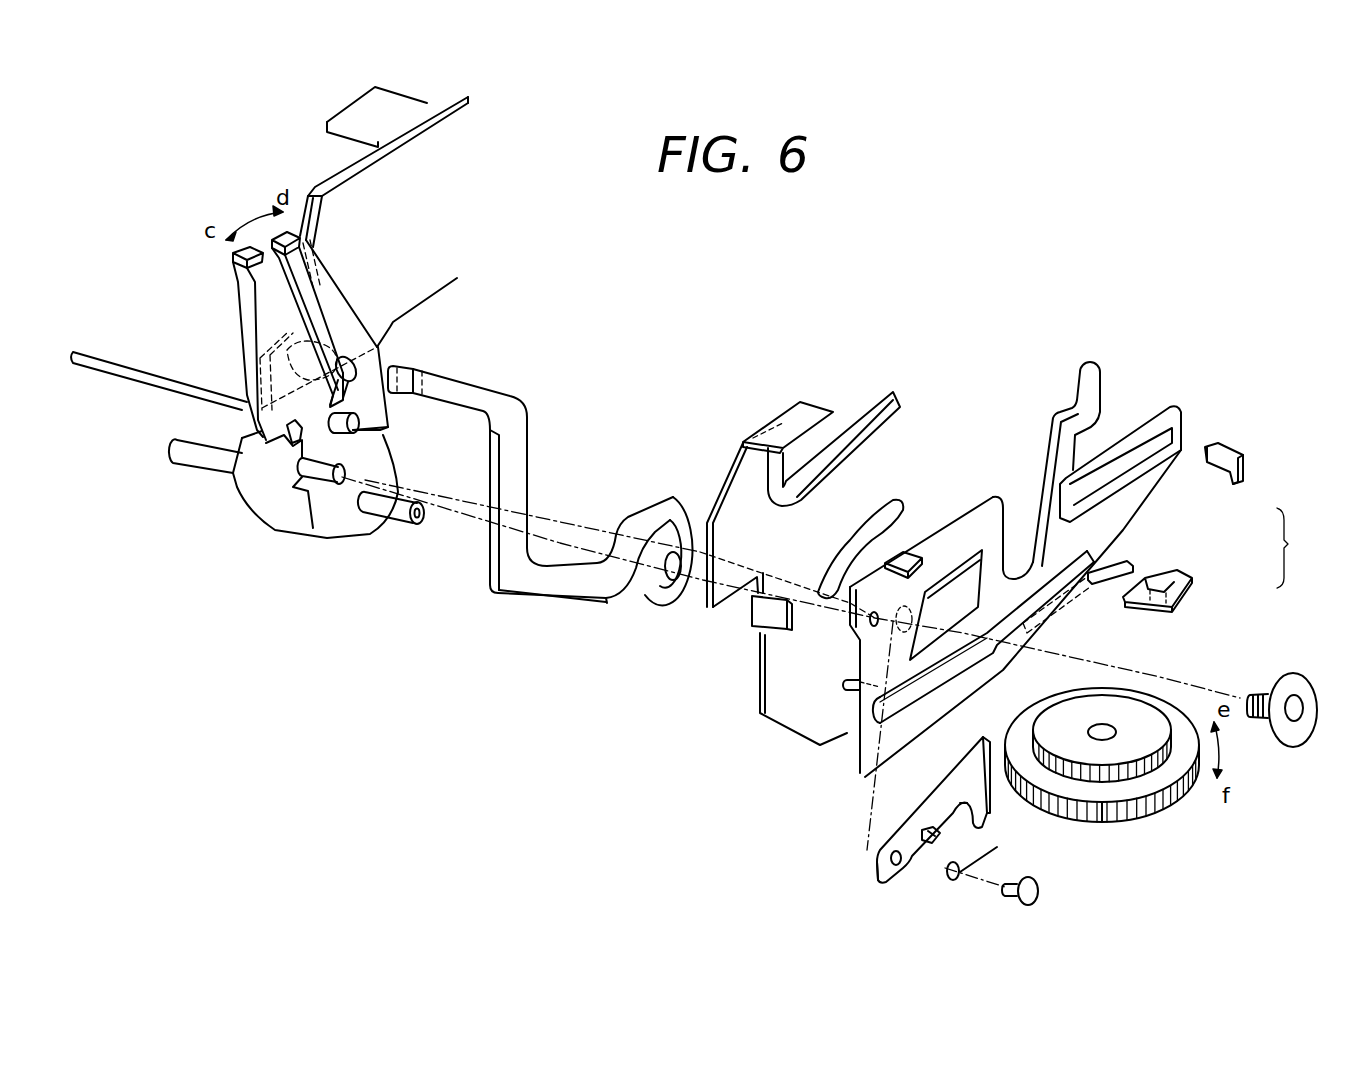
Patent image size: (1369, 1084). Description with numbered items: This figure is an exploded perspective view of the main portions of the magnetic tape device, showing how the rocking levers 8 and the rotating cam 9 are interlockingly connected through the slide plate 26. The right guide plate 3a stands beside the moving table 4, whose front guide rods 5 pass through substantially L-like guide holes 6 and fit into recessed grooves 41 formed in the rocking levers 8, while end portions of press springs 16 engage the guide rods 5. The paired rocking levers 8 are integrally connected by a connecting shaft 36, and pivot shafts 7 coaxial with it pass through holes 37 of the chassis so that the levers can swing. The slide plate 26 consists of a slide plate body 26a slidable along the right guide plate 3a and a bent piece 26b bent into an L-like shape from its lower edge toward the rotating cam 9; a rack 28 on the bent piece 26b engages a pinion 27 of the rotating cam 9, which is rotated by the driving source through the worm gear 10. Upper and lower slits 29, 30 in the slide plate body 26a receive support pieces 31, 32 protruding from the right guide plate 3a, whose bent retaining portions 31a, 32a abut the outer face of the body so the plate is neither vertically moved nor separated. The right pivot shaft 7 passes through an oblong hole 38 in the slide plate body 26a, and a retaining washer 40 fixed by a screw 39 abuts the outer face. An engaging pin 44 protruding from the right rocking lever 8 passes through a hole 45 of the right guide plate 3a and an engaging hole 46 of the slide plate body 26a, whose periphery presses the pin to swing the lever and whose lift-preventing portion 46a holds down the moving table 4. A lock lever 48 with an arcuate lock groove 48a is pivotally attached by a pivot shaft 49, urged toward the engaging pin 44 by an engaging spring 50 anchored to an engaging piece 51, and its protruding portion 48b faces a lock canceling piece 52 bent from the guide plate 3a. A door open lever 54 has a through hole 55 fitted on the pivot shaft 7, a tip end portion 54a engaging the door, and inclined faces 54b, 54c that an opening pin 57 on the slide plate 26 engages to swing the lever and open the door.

The right guide plate 3a is at (770, 582).
The moving table 4 is at (450, 287).
The guide rod 5 is at (347, 367).
The guide hole 6 is at (833, 447).
The pivot shaft 7 is at (401, 515).
The rocking lever 8 is at (267, 500).
The rotating cam 9 is at (1120, 821).
The worm gear 10 is at (1177, 793).
The press spring 16 is at (330, 368).
The slide plate 26 is at (1298, 548).
The slide plate body 26a is at (1027, 606).
The bent piece 26b is at (1184, 552).
The pinion 27 is at (1133, 780).
The rack 28 is at (1115, 562).
The upper slit 29 is at (1118, 468).
The lower slit 30 is at (1020, 600).
The support piece 31 is at (1263, 443).
The retaining portion 31a is at (1230, 485).
The support piece 32 is at (1143, 621).
The retaining portion 32a is at (1160, 605).
The connecting shaft 36 is at (195, 463).
The hole 37 is at (873, 640).
The oblong hole 38 is at (943, 670).
The screw 39 is at (1293, 700).
The retaining washer 40 is at (1282, 710).
The recessed groove 41 is at (277, 295).
The engaging pin 44 is at (318, 477).
The hole 45 is at (843, 537).
The engaging hole 46 is at (962, 577).
The lift-preventing portion 46a is at (920, 645).
The lock lever 48 is at (928, 822).
The lock groove 48a is at (973, 813).
The protruding portion 48b is at (877, 882).
The pivot shaft 49 is at (1037, 880).
The engaging spring 50 is at (945, 880).
The engaging piece 51 is at (905, 560).
The lock canceling piece 52 is at (760, 613).
The door open lever 54 is at (540, 513).
The tip end portion 54a is at (403, 362).
The inclined face 54b is at (532, 593).
The rear inclined face 54c is at (628, 578).
The through hole 55 is at (667, 573).
The opening pin 57 is at (841, 706).